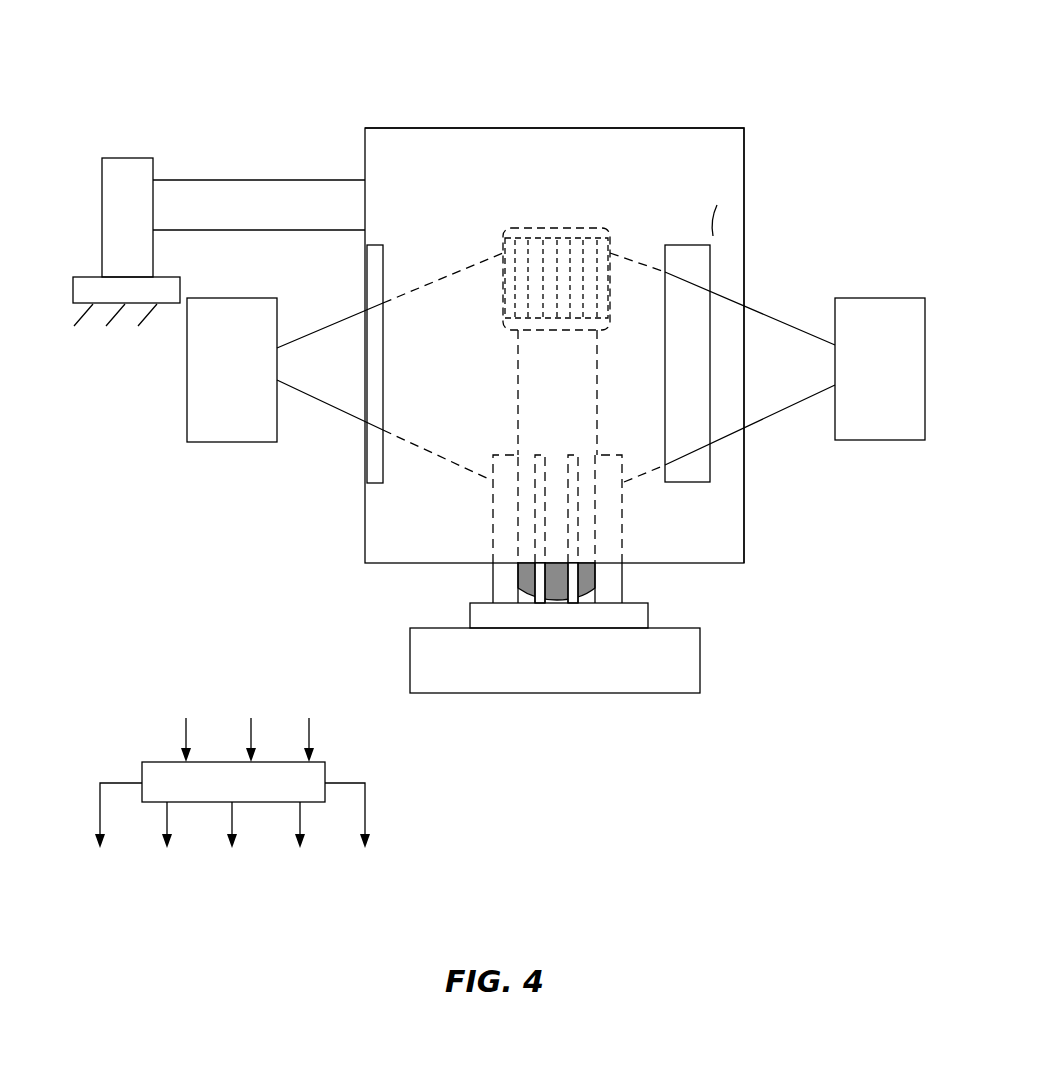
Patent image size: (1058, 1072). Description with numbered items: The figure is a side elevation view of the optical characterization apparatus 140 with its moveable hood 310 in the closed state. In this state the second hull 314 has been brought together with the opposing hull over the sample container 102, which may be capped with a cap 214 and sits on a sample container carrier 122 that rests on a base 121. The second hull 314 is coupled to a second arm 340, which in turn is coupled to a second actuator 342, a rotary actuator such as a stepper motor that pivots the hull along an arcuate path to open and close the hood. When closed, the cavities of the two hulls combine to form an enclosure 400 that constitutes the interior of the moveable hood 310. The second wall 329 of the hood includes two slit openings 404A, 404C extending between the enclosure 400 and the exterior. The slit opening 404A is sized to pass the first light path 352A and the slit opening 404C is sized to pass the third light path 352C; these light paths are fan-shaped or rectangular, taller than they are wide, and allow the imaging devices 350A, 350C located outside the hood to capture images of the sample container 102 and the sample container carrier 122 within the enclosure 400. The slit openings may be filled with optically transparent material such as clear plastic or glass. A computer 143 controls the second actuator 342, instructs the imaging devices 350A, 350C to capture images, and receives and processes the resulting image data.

The optical characterization apparatus 140 is at (248, 66).
The moveable hood 310 is at (408, 118).
The second hull 314 is at (662, 128).
The enclosure 400 is at (534, 148).
The second wall 329 is at (713, 221).
The second actuator 342 is at (128, 158).
The second arm 340 is at (263, 178).
The slit opening 404A is at (365, 452).
The slit opening 404C is at (697, 485).
The imaging device 350A is at (232, 370).
The imaging device 350C is at (880, 369).
The first light path 352A is at (343, 318).
The third light path 352C is at (758, 310).
The cap 214 is at (586, 228).
The sample container 102 is at (503, 582).
The sample container carrier 122 is at (650, 615).
The lift assembly 121 is at (700, 660).
The computer 143 is at (161, 762).